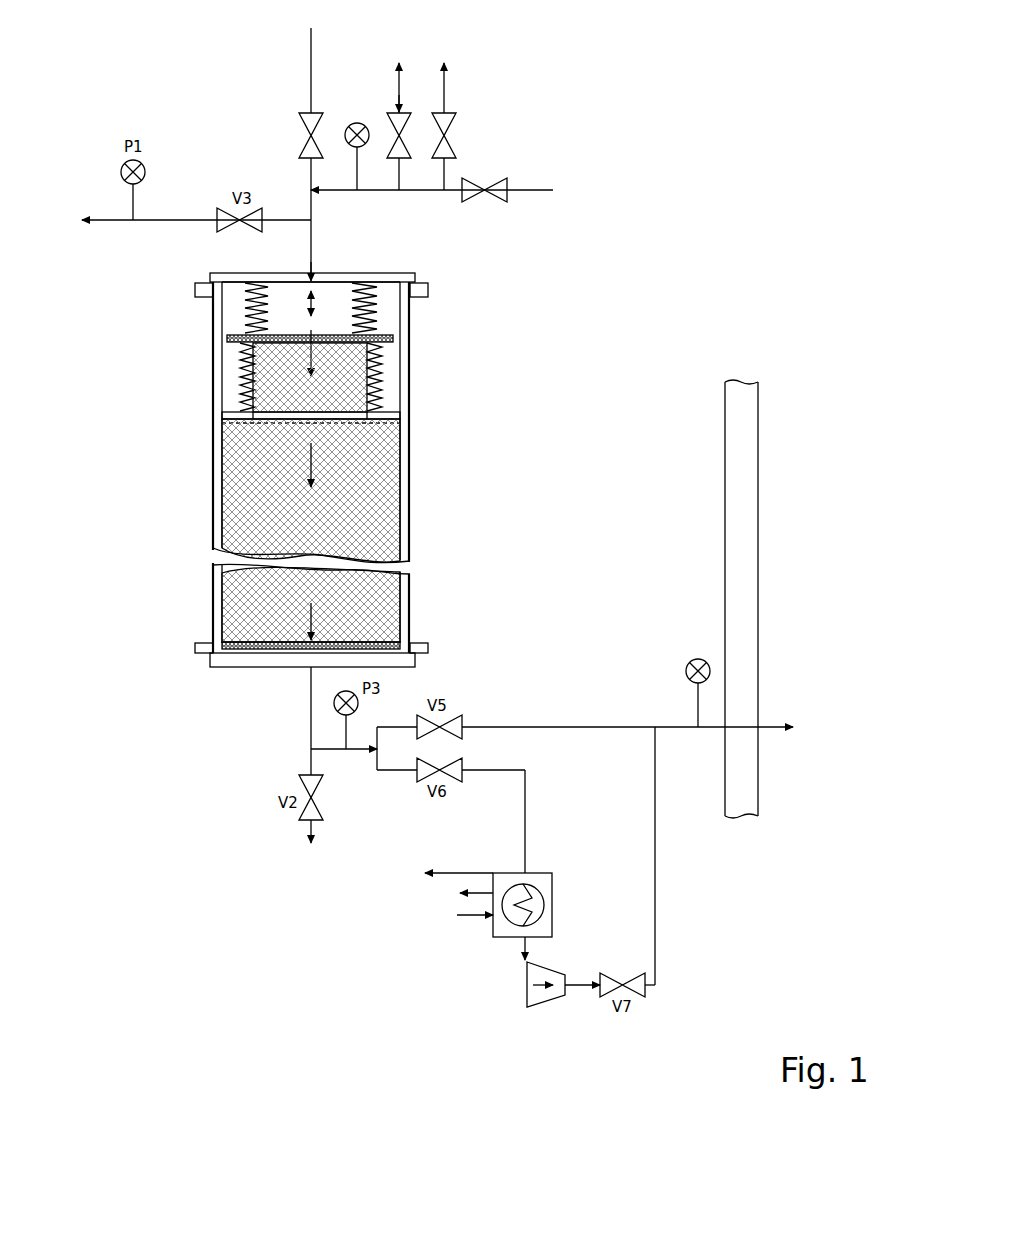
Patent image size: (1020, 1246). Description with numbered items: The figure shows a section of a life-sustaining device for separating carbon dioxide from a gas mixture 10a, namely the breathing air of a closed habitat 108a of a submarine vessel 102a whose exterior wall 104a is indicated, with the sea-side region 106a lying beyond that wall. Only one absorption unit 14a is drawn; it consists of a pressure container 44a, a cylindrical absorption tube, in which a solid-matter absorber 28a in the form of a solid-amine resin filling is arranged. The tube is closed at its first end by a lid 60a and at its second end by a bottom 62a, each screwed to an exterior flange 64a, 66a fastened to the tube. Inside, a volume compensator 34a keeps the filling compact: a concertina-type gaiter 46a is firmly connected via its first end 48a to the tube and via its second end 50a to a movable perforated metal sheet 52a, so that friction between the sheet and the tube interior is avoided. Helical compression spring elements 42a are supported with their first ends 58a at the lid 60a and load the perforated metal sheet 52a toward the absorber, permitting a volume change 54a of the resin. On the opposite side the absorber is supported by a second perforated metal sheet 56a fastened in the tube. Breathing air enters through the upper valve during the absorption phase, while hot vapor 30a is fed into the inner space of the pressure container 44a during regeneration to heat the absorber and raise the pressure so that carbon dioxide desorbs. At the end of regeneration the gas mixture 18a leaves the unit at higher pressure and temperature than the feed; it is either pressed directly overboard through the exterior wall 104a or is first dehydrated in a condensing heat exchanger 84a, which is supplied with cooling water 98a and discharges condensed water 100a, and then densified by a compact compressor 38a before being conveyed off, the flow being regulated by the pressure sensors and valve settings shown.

The gas mixture 10a is at (311, 62).
The hot vapor 30a is at (540, 190).
The absorption unit 14a is at (295, 461).
The first ends of the spring elements 58a is at (255, 278).
The lid 60a is at (345, 270).
The exterior flange 64a is at (422, 302).
The spring elements 42a is at (250, 306).
The volume compensator 34a is at (384, 306).
The volume change 54a is at (258, 314).
The second end of the concertina-type gaiter 50a is at (392, 349).
The perforated metal sheet 52a is at (225, 338).
The concertina-type gaiter 46a is at (385, 385).
The first end of the concertina-type gaiter 48a is at (395, 412).
The pressure container 44a is at (409, 498).
The solid-matter absorber 28a is at (312, 521).
The second perforated metal sheet 56a is at (225, 645).
The exterior flange 66a is at (405, 640).
The bottom 62a is at (415, 664).
The gas mixture 18a is at (590, 727).
The condensing heat exchanger 84a is at (493, 930).
The condensed water 100a is at (440, 877).
The cooling water 98a is at (460, 913).
The compact compressor 38a is at (527, 995).
The submarine vessel 102a is at (799, 558).
The exterior wall 104a is at (738, 398).
The habitat 108a is at (683, 449).
The second zone 106a is at (844, 619).